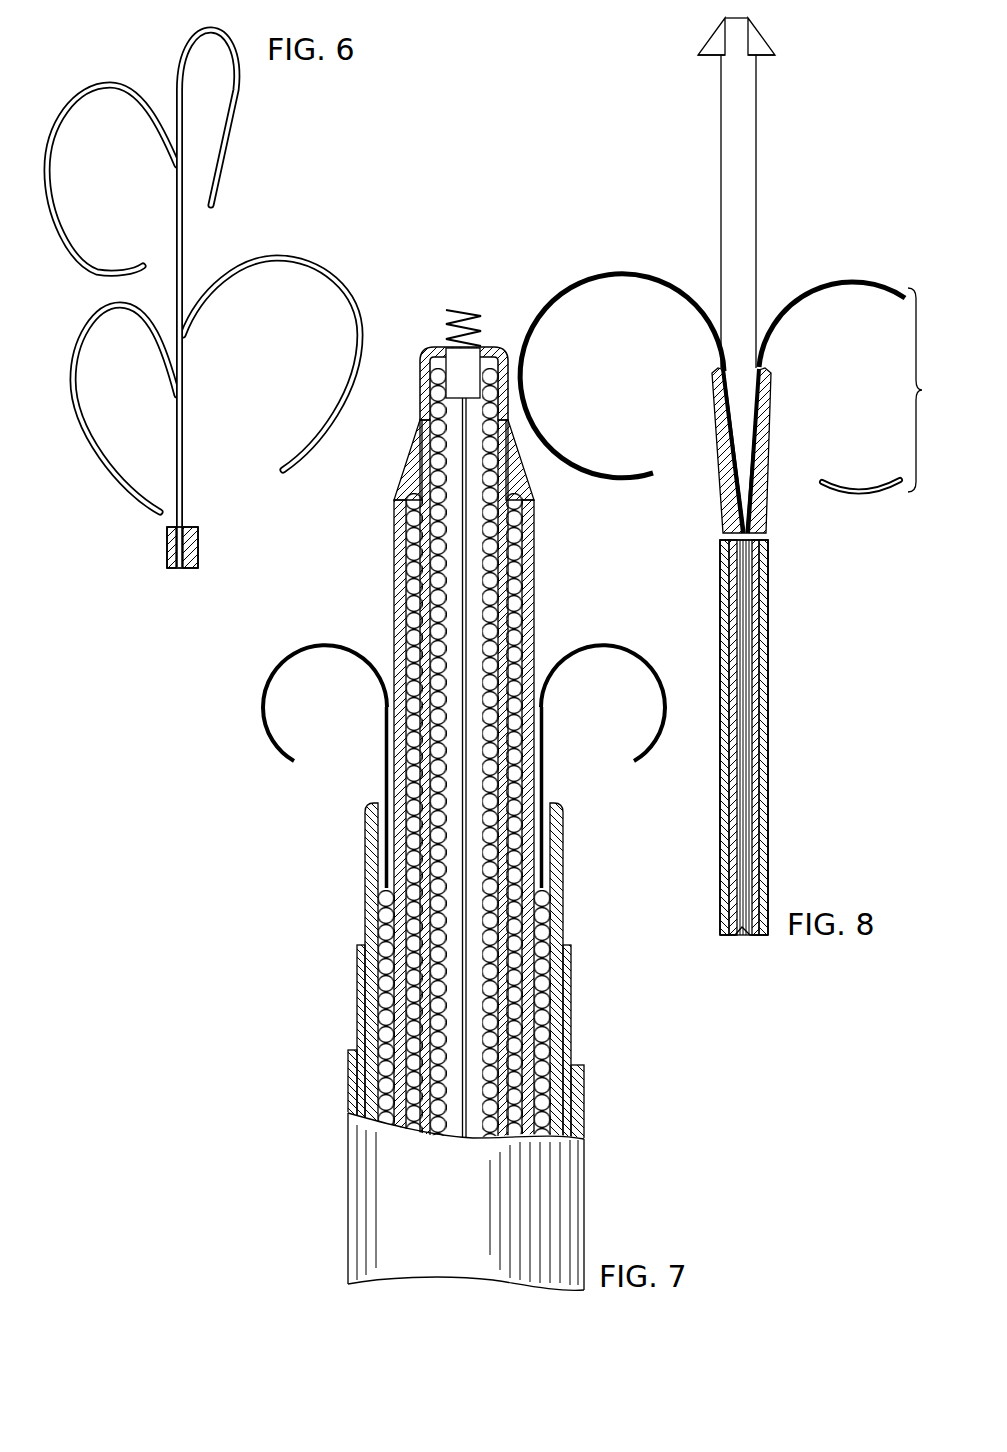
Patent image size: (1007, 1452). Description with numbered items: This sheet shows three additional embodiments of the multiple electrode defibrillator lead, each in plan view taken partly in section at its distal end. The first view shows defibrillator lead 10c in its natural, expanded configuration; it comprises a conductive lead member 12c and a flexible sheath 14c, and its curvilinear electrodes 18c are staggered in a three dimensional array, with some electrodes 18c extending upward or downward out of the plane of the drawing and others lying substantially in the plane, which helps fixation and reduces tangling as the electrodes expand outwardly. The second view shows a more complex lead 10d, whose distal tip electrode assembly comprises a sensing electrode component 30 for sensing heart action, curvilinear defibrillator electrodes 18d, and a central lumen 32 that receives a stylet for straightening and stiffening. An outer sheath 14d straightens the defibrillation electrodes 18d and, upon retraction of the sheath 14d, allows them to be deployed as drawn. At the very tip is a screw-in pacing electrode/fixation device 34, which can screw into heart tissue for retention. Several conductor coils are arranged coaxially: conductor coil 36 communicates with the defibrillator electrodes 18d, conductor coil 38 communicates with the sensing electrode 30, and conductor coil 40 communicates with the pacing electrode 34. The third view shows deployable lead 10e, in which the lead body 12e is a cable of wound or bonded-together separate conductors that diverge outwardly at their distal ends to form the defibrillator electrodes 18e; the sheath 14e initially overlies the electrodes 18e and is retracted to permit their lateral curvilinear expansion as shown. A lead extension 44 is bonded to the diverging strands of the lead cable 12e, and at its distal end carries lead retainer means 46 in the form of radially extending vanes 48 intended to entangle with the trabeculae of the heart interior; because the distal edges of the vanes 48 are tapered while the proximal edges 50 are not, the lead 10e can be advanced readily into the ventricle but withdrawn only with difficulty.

In FIG. 6, the curvilinear electrodes 18c is at (233, 120).
In FIG. 6, the conductive lead member 12c is at (187, 460).
In FIG. 6, the defibrillator lead 10c is at (158, 543).
In FIG. 6, the flexible sheath 14c is at (199, 553).
In FIG. 7, the screw-in pacing electrode/fixation device 34 is at (467, 305).
In FIG. 7, the conductor coil 40 is at (437, 457).
In FIG. 7, the central lumen 32 is at (462, 500).
In FIG. 7, the sensing electrode component 30 is at (386, 571).
In FIG. 7, the conductor coil 38 is at (413, 638).
In FIG. 7, the conductor coil 36 is at (392, 941).
In FIG. 7, the curvilinear defibrillator electrodes 18d is at (348, 668).
In FIG. 7, the outer sheath 14d is at (586, 1136).
In FIG. 7, the lead 10d is at (340, 1189).
In FIG. 8, the lead extension 44 is at (742, 226).
In FIG. 8, the lead retainer means 46 is at (762, 40).
In FIG. 8, the radially extending vanes 48 is at (712, 42).
In FIG. 8, the proximal edges 50 is at (714, 55).
In FIG. 8, the defibrillator electrodes 18e is at (660, 277).
In FIG. 8, the lead body 12e is at (742, 672).
In FIG. 8, the deployable lead 10e is at (776, 745).
In FIG. 8, the sheath 14e is at (765, 835).